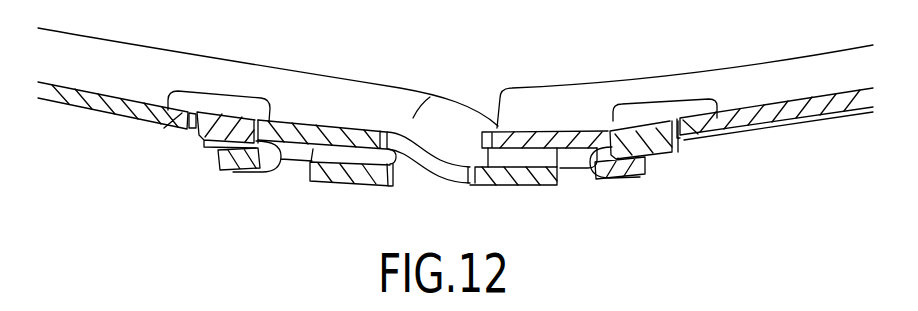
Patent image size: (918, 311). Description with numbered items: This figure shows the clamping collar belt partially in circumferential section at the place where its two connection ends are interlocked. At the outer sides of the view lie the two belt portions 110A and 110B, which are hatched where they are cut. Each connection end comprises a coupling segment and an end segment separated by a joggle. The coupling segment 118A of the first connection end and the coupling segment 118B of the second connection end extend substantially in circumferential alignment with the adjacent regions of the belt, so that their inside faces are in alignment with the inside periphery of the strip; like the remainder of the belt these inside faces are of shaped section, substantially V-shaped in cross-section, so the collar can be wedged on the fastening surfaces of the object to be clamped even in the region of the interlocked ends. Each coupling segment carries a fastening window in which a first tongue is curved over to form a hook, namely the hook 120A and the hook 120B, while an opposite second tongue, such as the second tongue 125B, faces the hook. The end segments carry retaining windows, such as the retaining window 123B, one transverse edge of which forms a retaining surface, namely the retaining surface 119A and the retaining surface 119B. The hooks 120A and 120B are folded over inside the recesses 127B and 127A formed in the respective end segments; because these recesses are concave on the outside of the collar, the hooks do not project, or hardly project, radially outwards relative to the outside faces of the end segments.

The belt portion 110B is at (67, 100).
The second tongue 125B is at (176, 117).
The retaining surface 119A is at (268, 122).
The recess 127A is at (196, 140).
The hook 120B is at (243, 158).
The coupling segment 118B is at (333, 117).
The retaining window 123B is at (312, 173).
The coupling segment 118A is at (547, 113).
The retaining surface 119B is at (590, 130).
The recess 127B is at (677, 162).
The hook 120A is at (627, 167).
The belt portion 110A is at (834, 106).